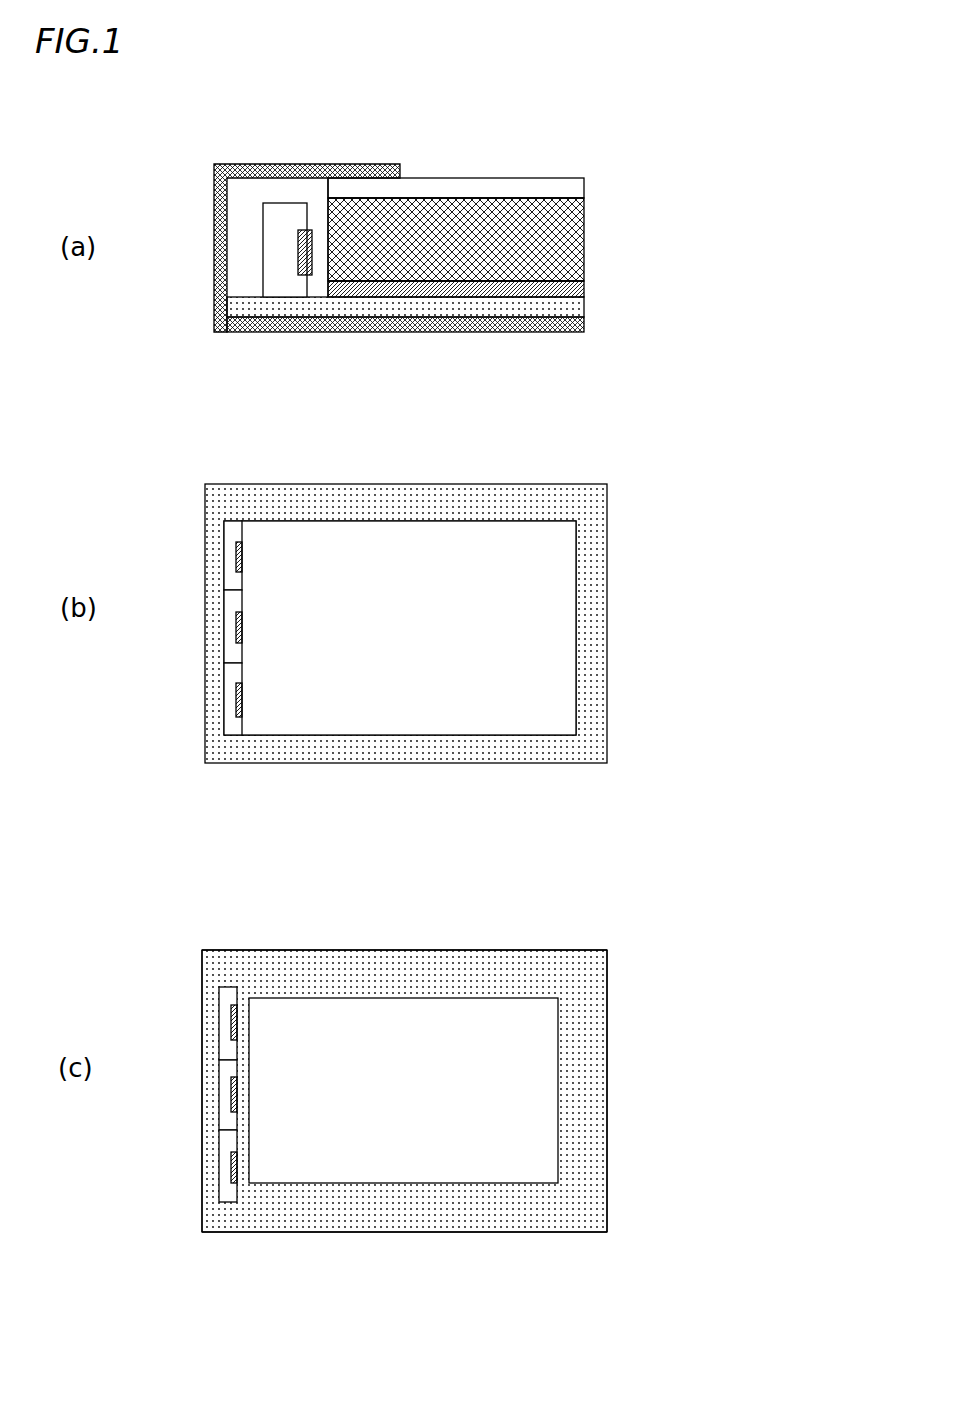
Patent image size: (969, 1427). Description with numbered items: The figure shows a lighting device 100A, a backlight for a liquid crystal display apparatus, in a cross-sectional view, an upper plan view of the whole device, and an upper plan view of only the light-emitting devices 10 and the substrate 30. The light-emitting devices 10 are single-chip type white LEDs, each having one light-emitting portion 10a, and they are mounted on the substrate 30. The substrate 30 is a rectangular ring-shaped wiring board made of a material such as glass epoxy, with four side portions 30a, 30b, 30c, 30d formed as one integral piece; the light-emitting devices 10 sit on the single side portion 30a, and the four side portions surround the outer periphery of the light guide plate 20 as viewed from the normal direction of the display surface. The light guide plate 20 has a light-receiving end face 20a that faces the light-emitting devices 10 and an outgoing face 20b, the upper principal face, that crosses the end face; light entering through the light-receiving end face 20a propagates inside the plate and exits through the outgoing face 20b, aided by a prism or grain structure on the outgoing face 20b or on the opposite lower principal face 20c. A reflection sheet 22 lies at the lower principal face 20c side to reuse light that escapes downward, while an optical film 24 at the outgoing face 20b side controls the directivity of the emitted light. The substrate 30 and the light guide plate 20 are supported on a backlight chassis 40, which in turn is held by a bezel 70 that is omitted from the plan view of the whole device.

The lighting device 100A is at (600, 150).
The light-emitting device 10 is at (281, 264).
The light-emitting portion 10a is at (297, 246).
The light guide plate 20 is at (562, 243).
The light-receiving end face 20a is at (325, 243).
The outgoing face 20b is at (457, 199).
The lower principal face 20c is at (453, 284).
The reflection sheet 22 is at (580, 289).
The optical film 24 is at (567, 186).
The substrate 30 is at (281, 311).
The side portion 30a is at (205, 1078).
The side portion 30b is at (396, 1234).
The side portion 30c is at (590, 1081).
The side portion 30d is at (393, 975).
The backlight chassis 40 is at (361, 328).
The bezel 70 is at (251, 164).